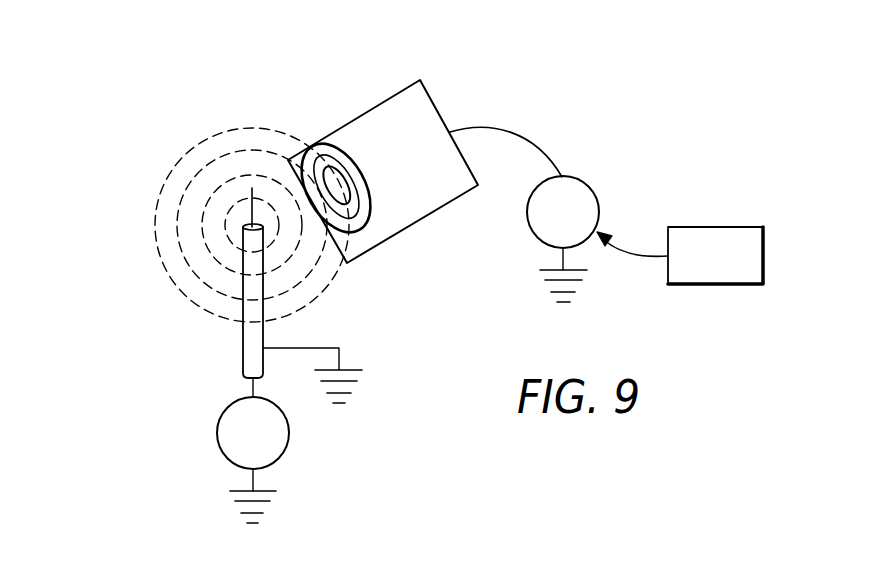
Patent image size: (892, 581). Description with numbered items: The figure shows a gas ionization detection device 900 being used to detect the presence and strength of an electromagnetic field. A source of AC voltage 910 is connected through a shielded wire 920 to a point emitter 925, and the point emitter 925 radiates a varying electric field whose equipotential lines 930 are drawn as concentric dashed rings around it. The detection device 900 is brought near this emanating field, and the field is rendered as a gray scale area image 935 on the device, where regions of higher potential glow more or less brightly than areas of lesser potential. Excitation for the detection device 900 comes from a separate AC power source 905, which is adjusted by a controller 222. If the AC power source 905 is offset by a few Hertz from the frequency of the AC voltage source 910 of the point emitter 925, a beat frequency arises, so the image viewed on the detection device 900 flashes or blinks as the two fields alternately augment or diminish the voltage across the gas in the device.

The detection device 900 is at (432, 92).
The gray scale area image 935 is at (340, 152).
The equipotential lines 930 is at (218, 164).
The point emitter 925 is at (252, 215).
The shielded wire 920 is at (242, 356).
The source of AC voltage 910 is at (288, 433).
The AC power source 905 is at (580, 178).
The controller 222 is at (711, 227).